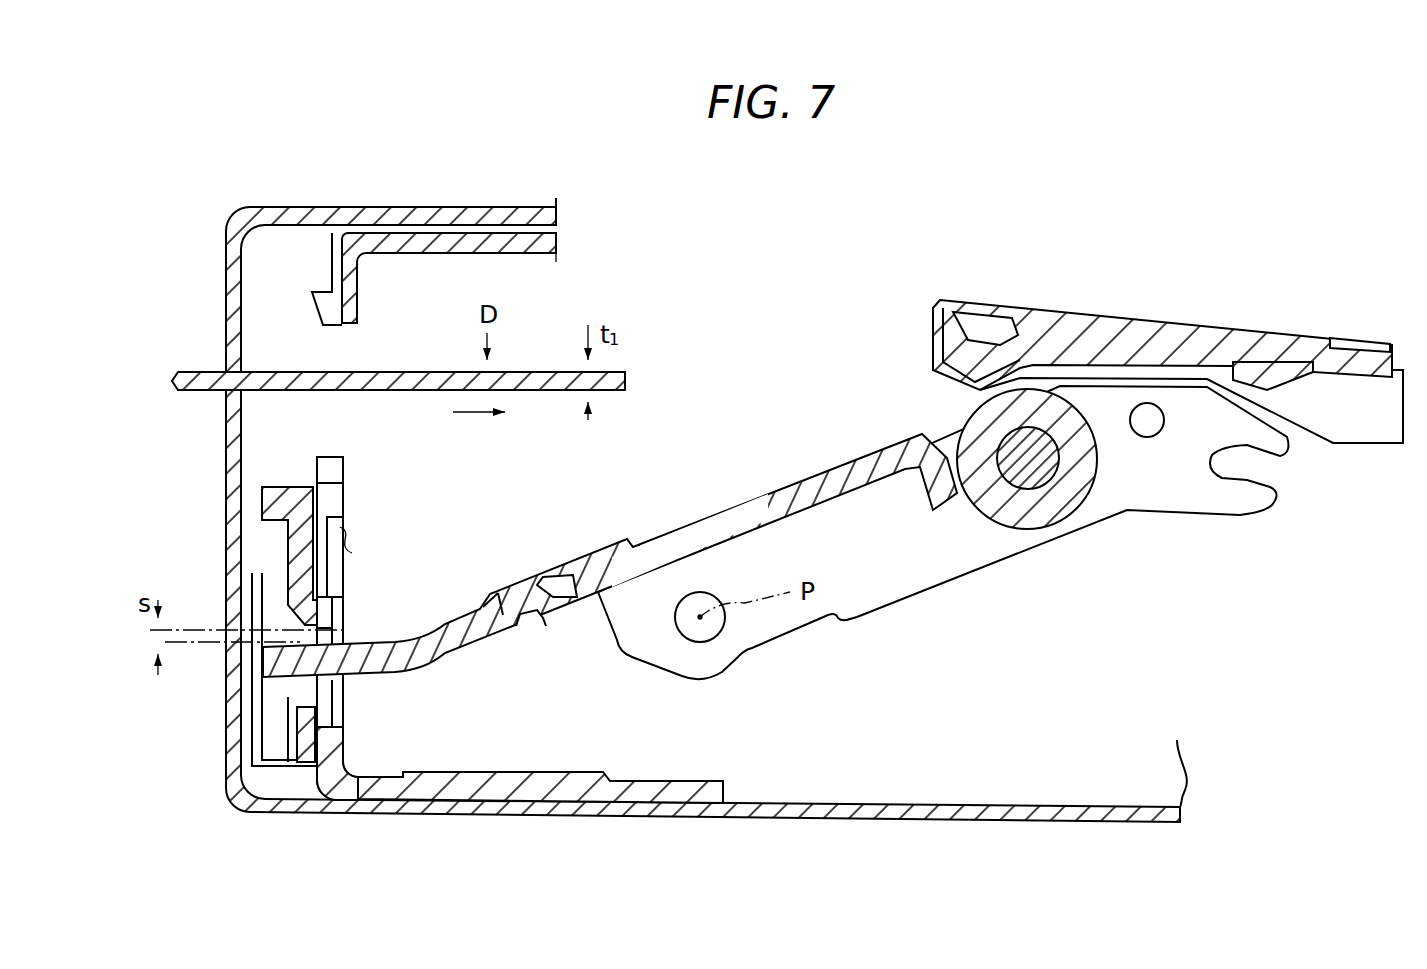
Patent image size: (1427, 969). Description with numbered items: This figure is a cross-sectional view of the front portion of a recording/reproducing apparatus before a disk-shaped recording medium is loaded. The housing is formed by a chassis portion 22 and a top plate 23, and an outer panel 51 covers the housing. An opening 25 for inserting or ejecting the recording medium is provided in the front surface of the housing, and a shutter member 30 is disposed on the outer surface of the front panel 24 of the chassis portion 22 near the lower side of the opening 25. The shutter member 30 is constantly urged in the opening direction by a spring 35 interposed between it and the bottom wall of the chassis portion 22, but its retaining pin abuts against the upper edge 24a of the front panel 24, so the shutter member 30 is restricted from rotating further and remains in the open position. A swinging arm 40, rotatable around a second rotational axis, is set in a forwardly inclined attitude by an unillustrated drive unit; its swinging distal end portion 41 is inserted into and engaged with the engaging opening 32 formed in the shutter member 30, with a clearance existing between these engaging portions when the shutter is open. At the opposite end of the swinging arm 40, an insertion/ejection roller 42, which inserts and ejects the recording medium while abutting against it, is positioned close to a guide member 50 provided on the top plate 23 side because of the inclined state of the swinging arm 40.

The outer panel 51 is at (296, 206).
The top plate 23 is at (527, 268).
The opening 25 is at (347, 335).
The shutter member 30 is at (292, 478).
The spring 35 is at (347, 533).
The upper edge of the front panel 24a is at (355, 552).
The engaging opening 32 is at (557, 591).
The front panel 24 is at (345, 700).
The swinging distal end portion 41 is at (266, 664).
The chassis portion 22 is at (677, 778).
The swinging arm 40 is at (557, 560).
The insertion/ejection roller 42 is at (1087, 506).
The guide member 50 is at (1192, 313).